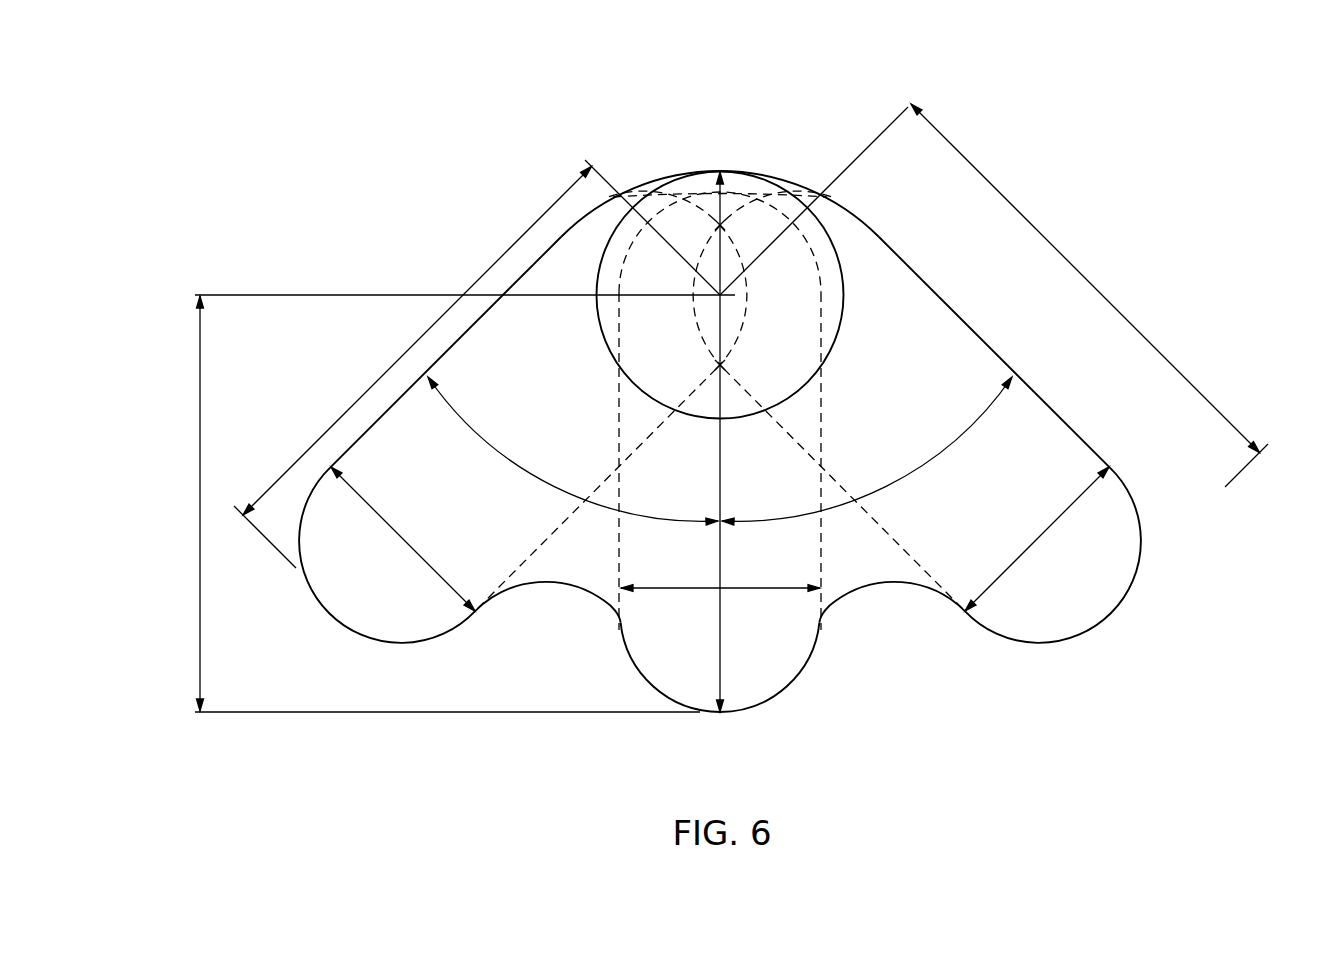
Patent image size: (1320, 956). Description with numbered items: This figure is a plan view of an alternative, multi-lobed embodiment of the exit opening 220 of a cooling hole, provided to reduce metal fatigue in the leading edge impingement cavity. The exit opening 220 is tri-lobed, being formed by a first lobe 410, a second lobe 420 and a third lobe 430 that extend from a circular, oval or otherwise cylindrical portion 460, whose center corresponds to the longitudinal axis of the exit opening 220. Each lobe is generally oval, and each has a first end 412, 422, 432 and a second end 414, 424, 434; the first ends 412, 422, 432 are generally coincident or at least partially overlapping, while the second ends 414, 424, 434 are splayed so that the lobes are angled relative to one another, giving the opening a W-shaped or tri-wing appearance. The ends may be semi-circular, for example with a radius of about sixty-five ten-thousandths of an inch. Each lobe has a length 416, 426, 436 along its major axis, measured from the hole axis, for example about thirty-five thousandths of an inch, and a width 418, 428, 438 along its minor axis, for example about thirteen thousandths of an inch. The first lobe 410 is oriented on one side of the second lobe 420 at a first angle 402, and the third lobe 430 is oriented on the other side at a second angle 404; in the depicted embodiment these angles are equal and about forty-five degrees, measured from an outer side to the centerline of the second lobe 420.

The exit opening 220 is at (720, 411).
The first angle 402 is at (546, 480).
The second angle 404 is at (894, 480).
The first lobe 410 is at (375, 420).
The first end of first lobe 412 is at (631, 190).
The second end of first lobe 414 is at (338, 620).
The length of first lobe 416 is at (415, 344).
The width of first lobe 418 is at (403, 536).
The second lobe 420 is at (608, 604).
The first end of second lobe 422 is at (705, 172).
The second end of second lobe 424 is at (714, 716).
The length of second lobe 426 is at (198, 503).
The width of second lobe 428 is at (689, 586).
The third lobe 430 is at (948, 306).
The first end of third lobe 432 is at (810, 190).
The second end of third lobe 434 is at (1102, 620).
The length of third lobe 436 is at (1107, 300).
The width of third lobe 438 is at (1037, 536).
The cylindrical portion 460 is at (599, 338).